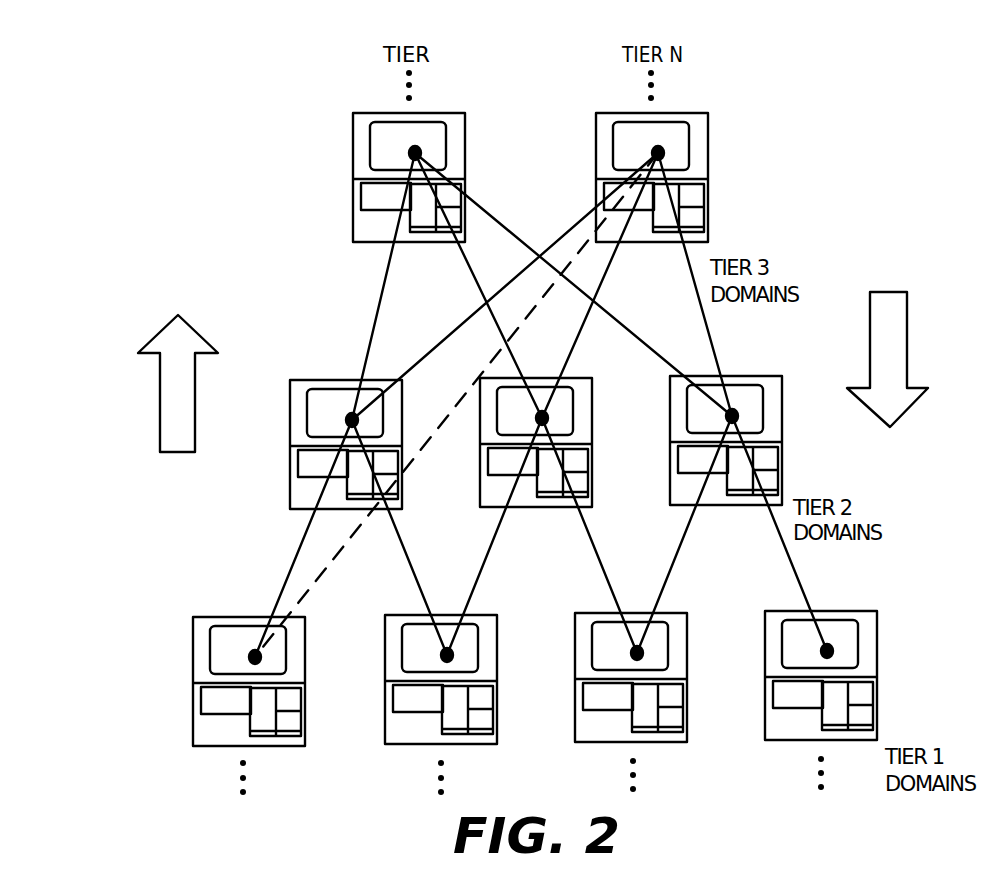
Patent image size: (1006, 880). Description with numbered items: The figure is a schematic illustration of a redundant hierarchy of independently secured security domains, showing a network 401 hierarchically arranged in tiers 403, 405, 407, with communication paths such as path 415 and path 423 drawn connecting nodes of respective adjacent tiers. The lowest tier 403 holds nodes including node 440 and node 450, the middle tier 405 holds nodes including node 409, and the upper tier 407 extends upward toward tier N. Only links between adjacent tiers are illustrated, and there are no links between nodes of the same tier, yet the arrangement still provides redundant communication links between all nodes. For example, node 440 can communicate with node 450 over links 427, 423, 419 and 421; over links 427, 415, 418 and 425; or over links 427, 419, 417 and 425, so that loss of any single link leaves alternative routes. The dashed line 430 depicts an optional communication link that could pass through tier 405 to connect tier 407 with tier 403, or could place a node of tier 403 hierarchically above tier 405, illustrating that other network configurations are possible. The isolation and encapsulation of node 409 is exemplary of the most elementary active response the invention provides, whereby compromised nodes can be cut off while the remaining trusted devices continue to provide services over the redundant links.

The network 401 is at (370, 778).
The tier 403 is at (218, 681).
The tier 405 is at (852, 466).
The tier 407 is at (752, 116).
The node 409 is at (480, 483).
The communication path 415 is at (373, 324).
The communication link 417 is at (712, 325).
The communication link 418 is at (498, 217).
The communication link 419 is at (559, 236).
The communication link 421 is at (585, 520).
The communication path 423 is at (416, 590).
The communication link 425 is at (668, 575).
The communication link 427 is at (293, 568).
The communication link 430 is at (543, 310).
The node 440 is at (305, 716).
The node 450 is at (687, 713).